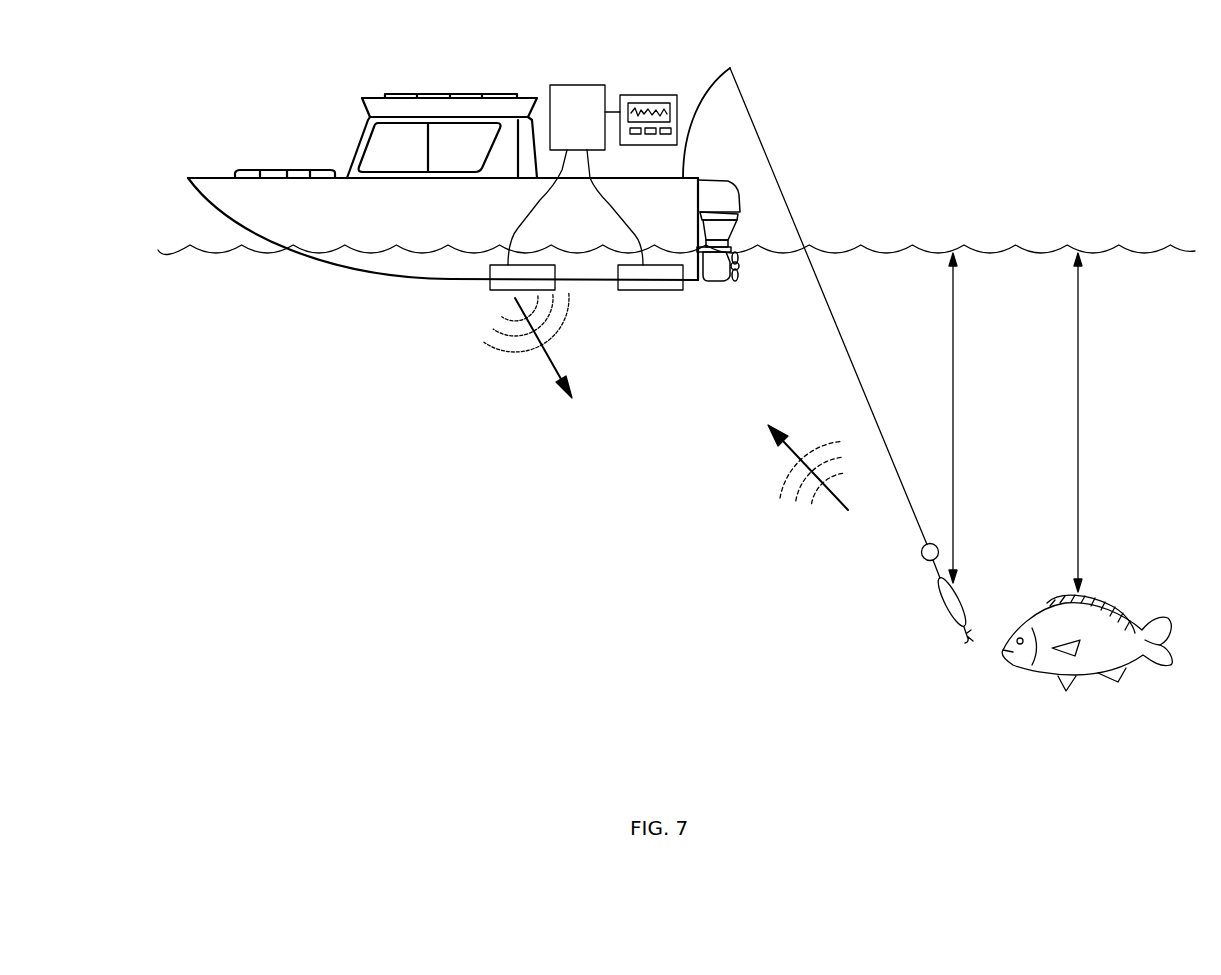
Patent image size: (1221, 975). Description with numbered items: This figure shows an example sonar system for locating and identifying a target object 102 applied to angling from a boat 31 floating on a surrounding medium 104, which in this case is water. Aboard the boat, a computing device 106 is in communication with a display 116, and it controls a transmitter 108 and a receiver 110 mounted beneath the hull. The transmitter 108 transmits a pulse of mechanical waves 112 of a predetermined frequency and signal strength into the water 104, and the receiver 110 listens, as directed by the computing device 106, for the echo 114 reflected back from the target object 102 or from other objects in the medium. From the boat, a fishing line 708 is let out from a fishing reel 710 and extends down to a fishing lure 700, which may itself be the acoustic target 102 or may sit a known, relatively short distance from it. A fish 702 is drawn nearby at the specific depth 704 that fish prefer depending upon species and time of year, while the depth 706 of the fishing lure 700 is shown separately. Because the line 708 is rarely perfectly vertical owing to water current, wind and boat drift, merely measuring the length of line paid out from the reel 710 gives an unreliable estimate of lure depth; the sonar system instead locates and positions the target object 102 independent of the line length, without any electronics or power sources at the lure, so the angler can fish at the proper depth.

The boat / watercraft 31 is at (215, 177).
The target object 102 is at (920, 553).
The surrounding medium 104 is at (1157, 250).
The computing device 106 is at (548, 84).
The transmitter 108 is at (488, 284).
The receiver 110 is at (670, 290).
The mechanical waves 112 is at (532, 352).
The echo 114 is at (833, 498).
The display 116 is at (637, 93).
The fishing lure 700 is at (950, 618).
The fish 702 is at (1130, 605).
The depth of fish 704 is at (1080, 500).
The depth of fishing lure 706 is at (953, 403).
The fishing line 708 is at (857, 367).
The fishing reel 710 is at (713, 75).